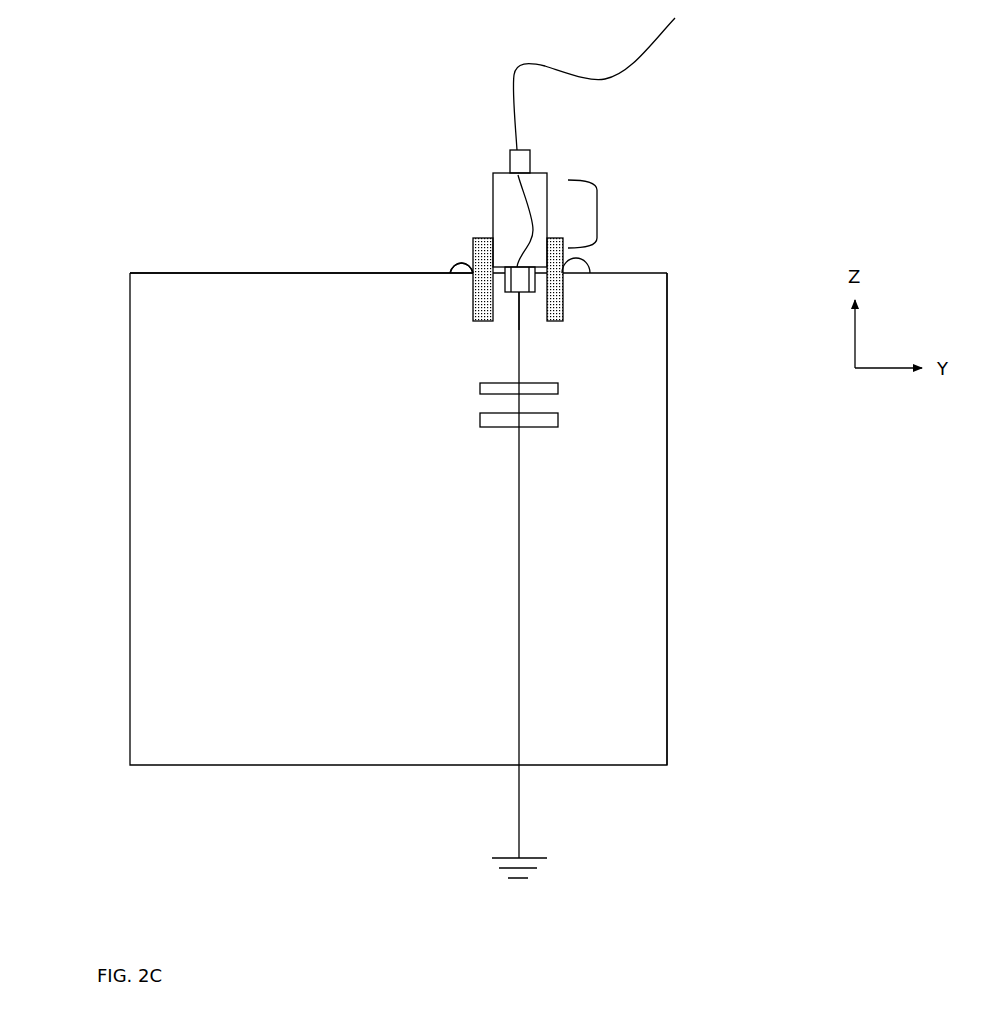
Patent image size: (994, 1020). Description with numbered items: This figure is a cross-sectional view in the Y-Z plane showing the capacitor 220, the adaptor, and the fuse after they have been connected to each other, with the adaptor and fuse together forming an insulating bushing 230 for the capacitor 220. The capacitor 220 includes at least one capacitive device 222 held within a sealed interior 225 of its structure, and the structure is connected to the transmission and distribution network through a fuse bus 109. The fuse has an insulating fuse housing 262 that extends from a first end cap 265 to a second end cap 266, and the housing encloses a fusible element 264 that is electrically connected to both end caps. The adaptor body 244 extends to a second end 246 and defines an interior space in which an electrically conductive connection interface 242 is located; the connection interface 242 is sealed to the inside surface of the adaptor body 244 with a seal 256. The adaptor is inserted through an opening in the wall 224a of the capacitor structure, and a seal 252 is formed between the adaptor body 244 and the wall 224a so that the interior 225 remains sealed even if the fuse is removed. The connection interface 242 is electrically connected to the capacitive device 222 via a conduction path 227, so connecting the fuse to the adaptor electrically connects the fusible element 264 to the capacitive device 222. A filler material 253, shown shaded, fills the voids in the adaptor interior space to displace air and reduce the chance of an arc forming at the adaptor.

The fuse bus 109 is at (632, 58).
The second end cap 266 is at (520, 165).
The insulating fuse housing 262 is at (493, 178).
The fusible element 264 is at (523, 200).
The insulating bushing 230 is at (597, 213).
The second end 246 is at (488, 245).
The seal 256 is at (530, 285).
The filler material 253 is at (475, 240).
The adaptor body 244 is at (472, 258).
The seal 252 is at (465, 270).
The connection interface 242 is at (507, 281).
The first end cap 265 is at (518, 293).
The conduction path 227 is at (520, 330).
The capacitive device 222 is at (543, 423).
The sealed interior 225 is at (215, 690).
The wall 224a is at (173, 278).
The capacitor 220 is at (700, 607).